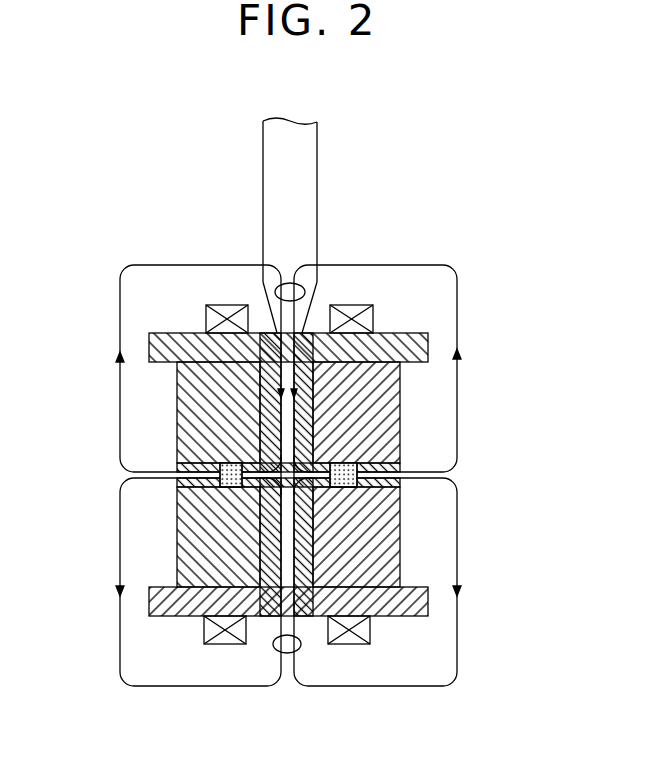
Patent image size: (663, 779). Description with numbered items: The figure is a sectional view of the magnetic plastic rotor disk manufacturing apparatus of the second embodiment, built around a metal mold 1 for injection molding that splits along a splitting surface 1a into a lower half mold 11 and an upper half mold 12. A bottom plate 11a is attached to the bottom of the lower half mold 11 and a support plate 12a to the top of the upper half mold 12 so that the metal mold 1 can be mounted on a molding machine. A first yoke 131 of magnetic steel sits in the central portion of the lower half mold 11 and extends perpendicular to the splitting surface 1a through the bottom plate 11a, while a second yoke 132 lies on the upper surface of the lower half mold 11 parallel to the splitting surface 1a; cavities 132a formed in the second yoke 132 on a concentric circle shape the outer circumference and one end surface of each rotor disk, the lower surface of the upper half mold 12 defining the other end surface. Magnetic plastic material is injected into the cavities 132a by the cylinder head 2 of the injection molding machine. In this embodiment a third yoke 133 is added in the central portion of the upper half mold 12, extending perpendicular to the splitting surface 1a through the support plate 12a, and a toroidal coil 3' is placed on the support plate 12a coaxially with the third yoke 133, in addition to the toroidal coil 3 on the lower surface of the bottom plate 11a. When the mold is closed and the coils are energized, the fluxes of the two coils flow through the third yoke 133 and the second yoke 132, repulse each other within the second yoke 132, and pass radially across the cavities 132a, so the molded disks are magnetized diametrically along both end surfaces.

The metal mold 1 is at (477, 457).
The splitting surface 1a is at (217, 472).
The cylinder head 2 is at (313, 168).
The toroidal coil 3 is at (326, 675).
The toroidal coil 3' is at (359, 305).
The lower half mold 11 is at (377, 553).
The bottom plate 11a is at (408, 606).
The upper half mold 12 is at (382, 412).
The support plate 12a is at (415, 345).
The first yoke 131 is at (265, 565).
The second yoke 132 is at (367, 485).
The cavities 132a is at (236, 487).
The third yoke 133 is at (272, 401).